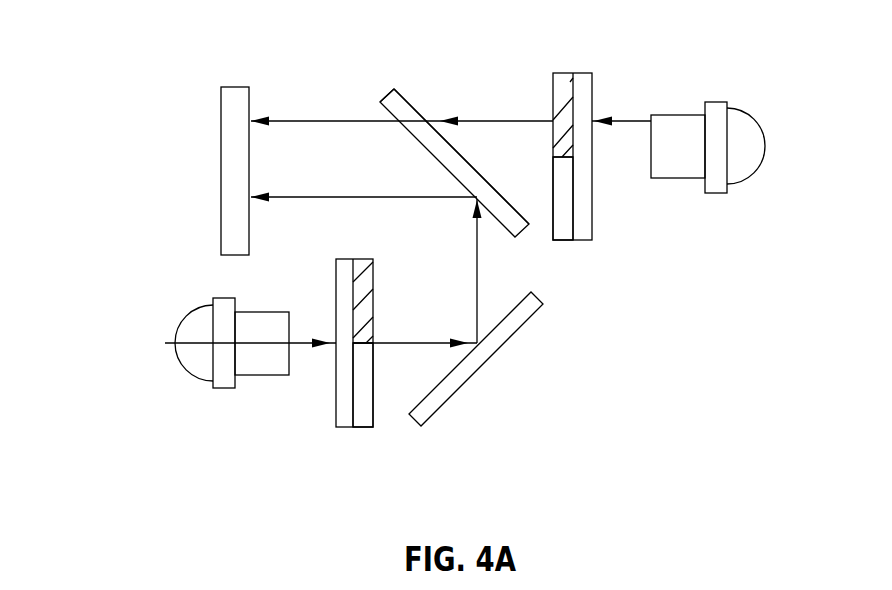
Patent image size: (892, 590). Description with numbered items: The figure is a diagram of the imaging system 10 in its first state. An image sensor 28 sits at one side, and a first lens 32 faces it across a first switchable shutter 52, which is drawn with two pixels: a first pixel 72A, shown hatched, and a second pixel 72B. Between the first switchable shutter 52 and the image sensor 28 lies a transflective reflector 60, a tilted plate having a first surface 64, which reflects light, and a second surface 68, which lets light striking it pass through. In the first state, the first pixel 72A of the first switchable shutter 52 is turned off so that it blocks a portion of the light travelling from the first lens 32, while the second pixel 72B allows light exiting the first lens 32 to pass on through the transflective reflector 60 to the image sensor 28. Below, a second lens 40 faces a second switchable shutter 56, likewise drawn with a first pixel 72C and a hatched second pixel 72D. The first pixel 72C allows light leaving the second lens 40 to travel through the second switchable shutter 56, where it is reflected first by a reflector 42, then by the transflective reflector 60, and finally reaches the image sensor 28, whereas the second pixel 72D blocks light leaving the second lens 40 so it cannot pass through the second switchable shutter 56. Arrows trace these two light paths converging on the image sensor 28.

The imaging system 10 is at (145, 80).
The image sensor 28 is at (231, 135).
The first lens 32 is at (745, 127).
The second lens 40 is at (190, 357).
The reflector 42 is at (490, 345).
The first switchable shutter 52 is at (583, 75).
The second switchable shutter 56 is at (346, 405).
The transflective reflector 60 is at (392, 91).
The first surface 64 is at (384, 111).
The second surface 68 is at (405, 100).
The first pixel of first switchable shutter 72A is at (565, 77).
The second pixel of first switchable shutter 72B is at (565, 239).
The first pixel of second switchable shutter 72C is at (366, 428).
The second pixel of second switchable shutter 72D is at (365, 261).